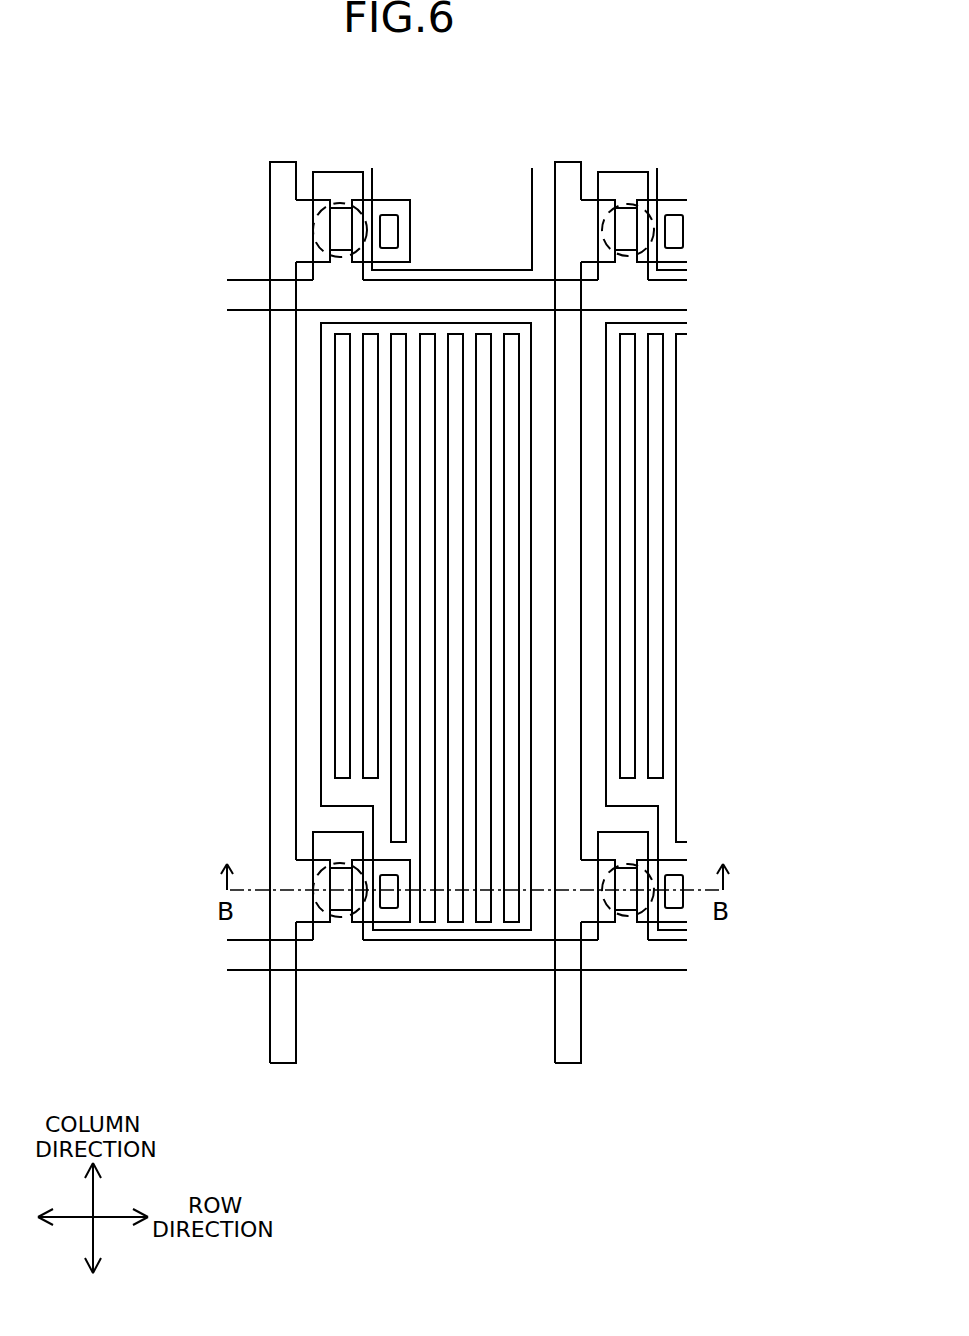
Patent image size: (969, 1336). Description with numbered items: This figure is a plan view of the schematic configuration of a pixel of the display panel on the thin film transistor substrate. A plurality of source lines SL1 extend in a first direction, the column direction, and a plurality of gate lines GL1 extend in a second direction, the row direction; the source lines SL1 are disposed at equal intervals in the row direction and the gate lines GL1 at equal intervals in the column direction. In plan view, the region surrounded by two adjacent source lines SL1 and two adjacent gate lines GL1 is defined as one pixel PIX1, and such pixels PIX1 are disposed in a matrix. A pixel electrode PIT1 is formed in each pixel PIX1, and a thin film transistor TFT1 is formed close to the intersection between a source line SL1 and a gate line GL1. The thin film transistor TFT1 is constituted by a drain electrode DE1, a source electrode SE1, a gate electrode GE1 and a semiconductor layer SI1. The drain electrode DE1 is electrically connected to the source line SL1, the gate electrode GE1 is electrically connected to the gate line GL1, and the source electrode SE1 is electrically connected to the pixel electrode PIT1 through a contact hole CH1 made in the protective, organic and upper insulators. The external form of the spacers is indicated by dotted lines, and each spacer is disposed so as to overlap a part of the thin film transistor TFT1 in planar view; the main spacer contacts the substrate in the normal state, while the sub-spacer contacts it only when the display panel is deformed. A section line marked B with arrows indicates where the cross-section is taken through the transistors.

The gate line GL1 is at (233, 295).
The source line SL1 is at (280, 1057).
The pixel PIX1 is at (477, 205).
The pixel electrode PIT1 is at (330, 590).
The thin film transistor TFT1 is at (417, 993).
The gate electrode GE1 is at (338, 932).
The drain electrode DE1 is at (320, 917).
The source electrode SE1 is at (383, 913).
The semiconductor layer SI1 is at (342, 907).
The contact hole CH1 is at (391, 903).